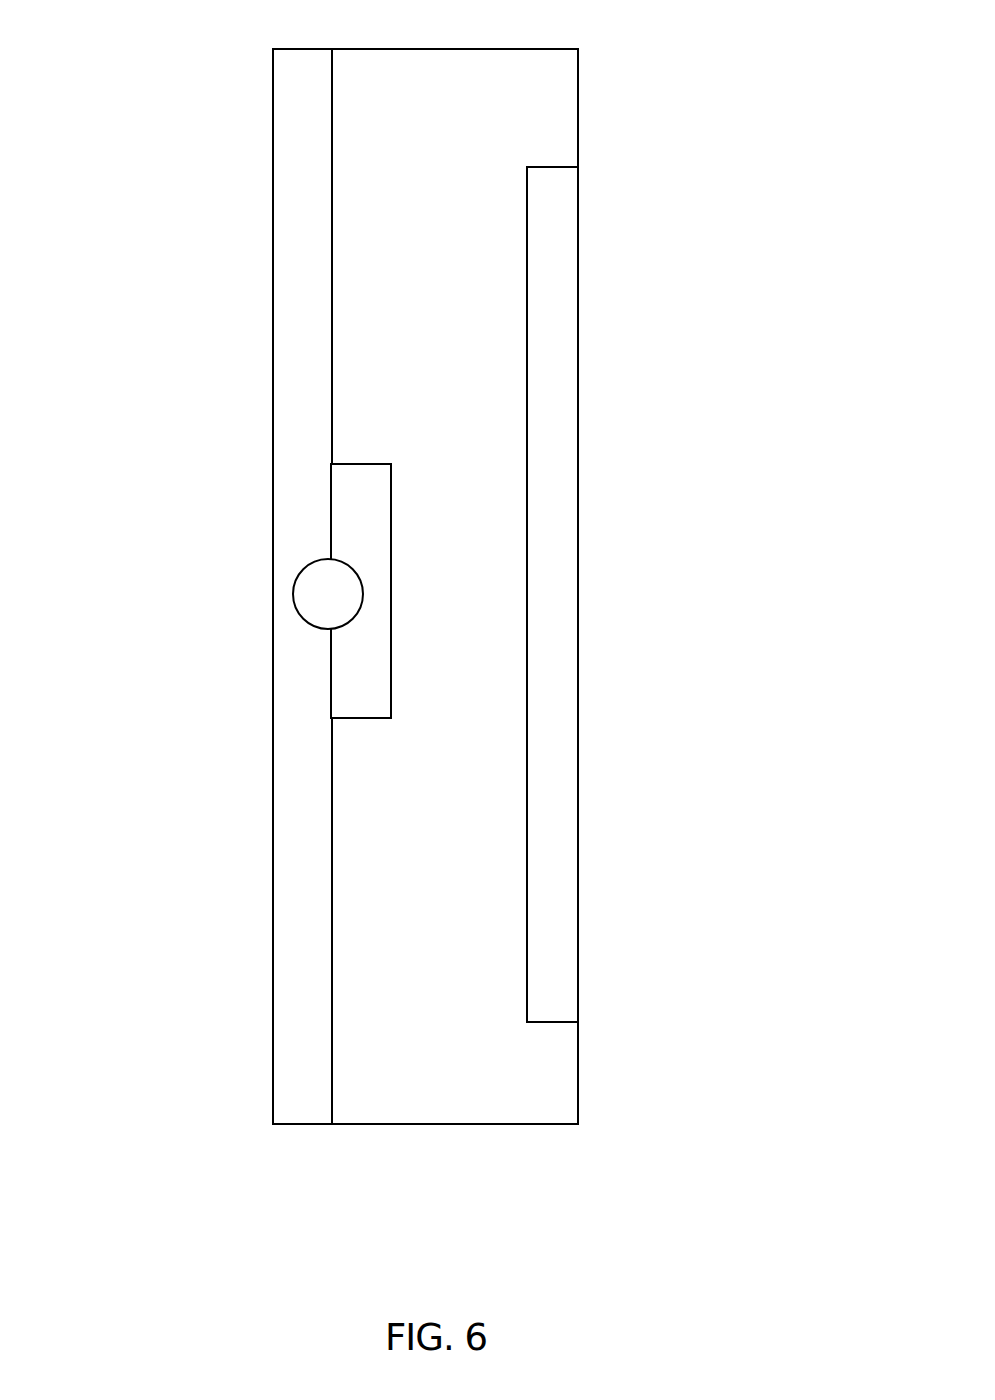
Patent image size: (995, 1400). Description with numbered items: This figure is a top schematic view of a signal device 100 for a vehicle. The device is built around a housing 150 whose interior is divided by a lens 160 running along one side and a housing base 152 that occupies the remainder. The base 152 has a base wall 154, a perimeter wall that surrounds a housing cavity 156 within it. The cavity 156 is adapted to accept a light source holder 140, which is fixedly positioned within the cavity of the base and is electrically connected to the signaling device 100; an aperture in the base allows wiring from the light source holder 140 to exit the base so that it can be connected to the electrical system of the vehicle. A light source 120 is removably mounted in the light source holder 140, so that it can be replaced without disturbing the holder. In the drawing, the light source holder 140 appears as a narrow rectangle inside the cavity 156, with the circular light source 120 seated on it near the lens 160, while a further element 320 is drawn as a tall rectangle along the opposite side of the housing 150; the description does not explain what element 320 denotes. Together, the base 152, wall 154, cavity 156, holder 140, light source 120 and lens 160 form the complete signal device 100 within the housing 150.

The signal device 100 is at (768, 983).
The light source 120 is at (320, 597).
The light source holder 140 is at (353, 515).
The housing 150 is at (545, 102).
The housing base 152 is at (476, 1082).
The base wall 154 is at (332, 992).
The housing cavity 156 is at (455, 787).
The lens 160 is at (313, 922).
The battery 320 is at (557, 347).